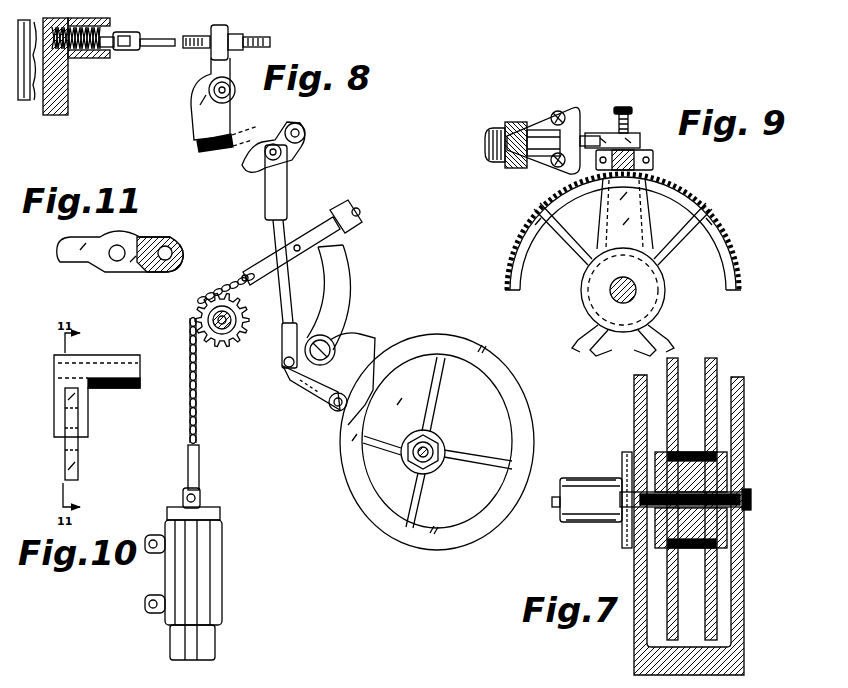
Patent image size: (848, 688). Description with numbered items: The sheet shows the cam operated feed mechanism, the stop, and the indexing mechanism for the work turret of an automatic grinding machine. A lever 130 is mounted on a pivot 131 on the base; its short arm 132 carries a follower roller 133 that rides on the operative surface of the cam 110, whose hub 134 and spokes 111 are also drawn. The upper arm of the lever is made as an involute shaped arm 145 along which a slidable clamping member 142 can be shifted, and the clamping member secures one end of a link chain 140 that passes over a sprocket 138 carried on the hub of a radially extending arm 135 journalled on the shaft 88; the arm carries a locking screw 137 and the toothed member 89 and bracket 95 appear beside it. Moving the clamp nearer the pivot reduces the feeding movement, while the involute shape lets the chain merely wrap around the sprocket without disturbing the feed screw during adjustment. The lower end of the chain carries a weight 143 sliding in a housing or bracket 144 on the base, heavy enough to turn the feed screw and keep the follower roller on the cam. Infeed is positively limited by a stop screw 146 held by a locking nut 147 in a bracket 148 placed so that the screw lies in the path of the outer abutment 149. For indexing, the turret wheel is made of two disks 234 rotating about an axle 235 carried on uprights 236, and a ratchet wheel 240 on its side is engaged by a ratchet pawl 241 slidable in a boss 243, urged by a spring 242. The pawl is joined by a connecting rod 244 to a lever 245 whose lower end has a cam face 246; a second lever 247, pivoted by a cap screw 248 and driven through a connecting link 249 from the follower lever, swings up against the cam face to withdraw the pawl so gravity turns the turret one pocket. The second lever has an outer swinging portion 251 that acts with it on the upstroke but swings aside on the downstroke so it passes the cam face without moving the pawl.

In FIG. 8, the ratchet wheel 240 is at (33, 101).
In FIG. 7, the ratchet wheel 240 is at (626, 462).
In FIG. 8, the ratchet pawl 241 is at (60, 92).
In FIG. 7, the ratchet pawl 241 is at (553, 497).
In FIG. 8, the spring 242 is at (82, 56).
In FIG. 8, the boss 243 is at (110, 48).
In FIG. 7, the boss 243 is at (598, 522).
In FIG. 8, the connecting rod 244 is at (195, 48).
In FIG. 8, the lever 245 is at (198, 118).
In FIG. 8, the cam face 246 is at (220, 148).
In FIG. 8, the second lever 247 is at (300, 147).
In FIG. 11, the second lever 247 is at (165, 240).
In FIG. 10, the second lever 247 is at (100, 360).
In FIG. 8, the cap screw 248 is at (305, 133).
In FIG. 8, the connecting link 249 is at (277, 228).
In FIG. 8, the slidable clamping member 142 is at (320, 240).
In FIG. 8, the involute shaped arm 145 is at (335, 282).
In FIG. 8, the pivot 131 is at (337, 347).
In FIG. 8, the shaft 88 is at (240, 310).
In FIG. 9, the shaft 88 is at (612, 292).
In FIG. 8, the link chain 140 is at (190, 345).
In FIG. 8, the sprocket 138 is at (232, 343).
In FIG. 8, the lever 130 is at (297, 383).
In FIG. 8, the short arm 132 is at (310, 380).
In FIG. 8, the follower roller 133 is at (337, 411).
In FIG. 8, the weight 143 is at (216, 510).
In FIG. 8, the housing or bracket 144 is at (222, 558).
In FIG. 8, the cam 110 is at (357, 493).
In FIG. 8, the hub nut 134 is at (443, 446).
In FIG. 8, the spokes 111 is at (434, 472).
In FIG. 11, the outer swinging portion 251 is at (88, 264).
In FIG. 10, the outer swinging portion 251 is at (80, 470).
In FIG. 9, the gear wheel 89 is at (512, 263).
In FIG. 9, the radially extending arm 135 is at (643, 212).
In FIG. 9, the locking nut 147 is at (523, 128).
In FIG. 9, the bracket 148 is at (548, 158).
In FIG. 9, the stop screw 146 is at (580, 134).
In FIG. 9, the outer abutment 149 is at (593, 133).
In FIG. 9, the locking screw 137 is at (626, 107).
In FIG. 9, the bracket 95 is at (645, 150).
In FIG. 7, the uprights 236 is at (636, 408).
In FIG. 7, the disks 234 is at (668, 372).
In FIG. 7, the axle 235 is at (748, 499).